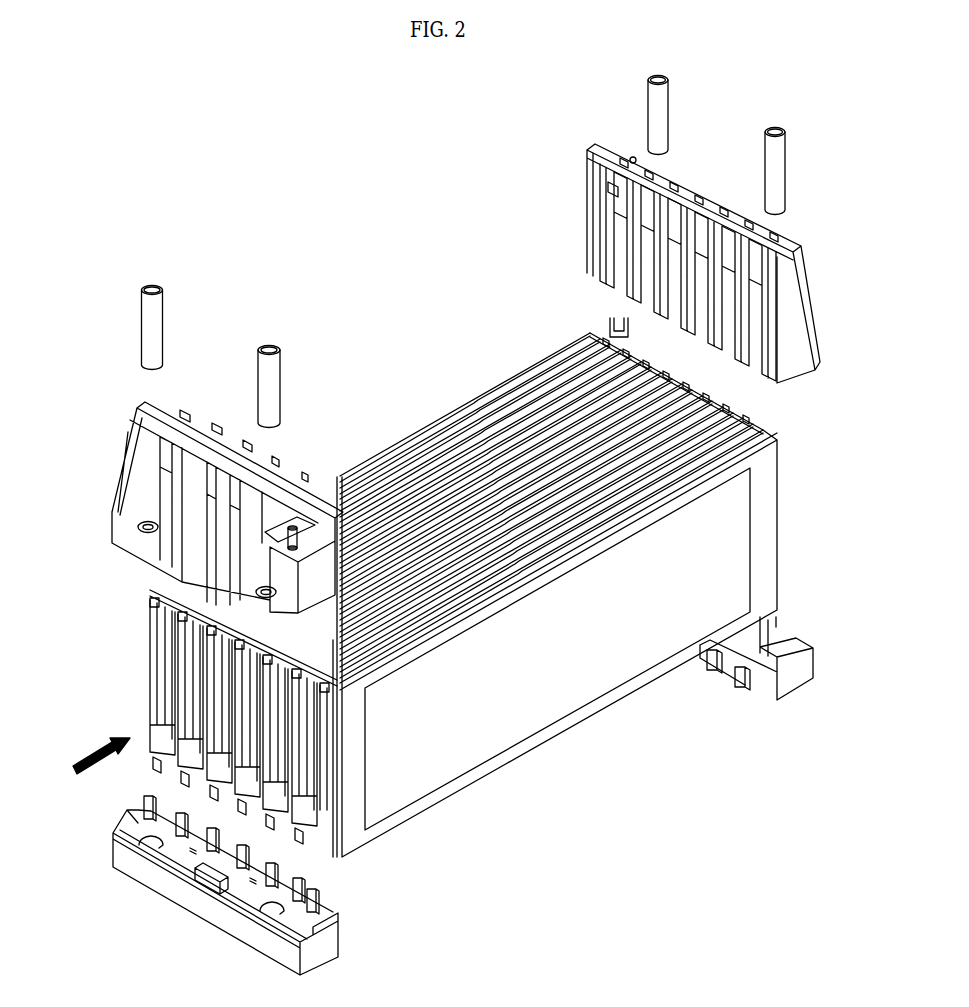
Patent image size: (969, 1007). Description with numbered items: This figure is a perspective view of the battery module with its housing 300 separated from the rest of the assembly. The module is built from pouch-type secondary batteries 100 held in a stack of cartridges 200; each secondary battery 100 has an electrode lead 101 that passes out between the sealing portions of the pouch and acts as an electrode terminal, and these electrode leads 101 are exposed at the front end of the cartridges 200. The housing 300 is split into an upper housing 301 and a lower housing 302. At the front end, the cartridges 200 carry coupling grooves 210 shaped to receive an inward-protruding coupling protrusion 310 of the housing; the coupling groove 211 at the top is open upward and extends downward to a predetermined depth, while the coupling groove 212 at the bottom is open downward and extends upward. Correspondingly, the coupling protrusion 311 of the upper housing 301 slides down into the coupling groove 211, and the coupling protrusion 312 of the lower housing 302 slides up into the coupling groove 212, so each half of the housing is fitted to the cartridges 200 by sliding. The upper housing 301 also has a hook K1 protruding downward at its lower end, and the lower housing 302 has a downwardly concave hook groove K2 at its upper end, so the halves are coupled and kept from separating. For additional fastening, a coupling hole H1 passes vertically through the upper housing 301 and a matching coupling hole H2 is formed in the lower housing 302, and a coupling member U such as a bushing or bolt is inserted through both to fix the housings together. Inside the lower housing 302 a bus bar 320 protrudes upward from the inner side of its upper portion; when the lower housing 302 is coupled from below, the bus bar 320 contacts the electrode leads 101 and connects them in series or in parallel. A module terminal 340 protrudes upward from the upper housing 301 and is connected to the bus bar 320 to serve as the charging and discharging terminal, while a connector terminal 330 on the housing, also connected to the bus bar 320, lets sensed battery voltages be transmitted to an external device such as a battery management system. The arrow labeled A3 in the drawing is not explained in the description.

The secondary battery 100 is at (543, 715).
The electrode lead 101 is at (182, 697).
The cartridge 200 is at (513, 392).
The coupling groove 210 is at (707, 866).
The coupling groove at the top 211 is at (745, 410).
The coupling groove at the bottom 212 is at (200, 798).
The housing 300 is at (707, 742).
The upper housing 301 is at (112, 548).
The lower housing 302 is at (126, 815).
The coupling protrusion 310 is at (707, 803).
The coupling protrusion of the upper housing 311 is at (213, 440).
The coupling protrusion of the lower housing 312 is at (730, 682).
The bus bar 320 is at (297, 879).
The connector terminal 330 is at (203, 890).
The module terminal 340 is at (293, 526).
The coupling member U is at (263, 380).
The hook K1 is at (695, 333).
The hook groove K2 is at (214, 850).
The coupling hole H1 is at (135, 520).
The coupling hole H2 is at (144, 848).
The viewing direction A3 is at (85, 766).